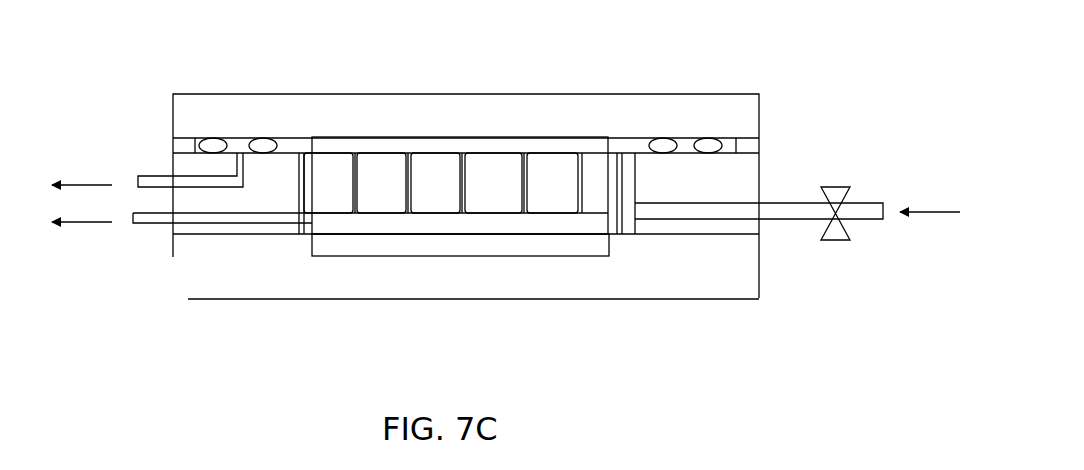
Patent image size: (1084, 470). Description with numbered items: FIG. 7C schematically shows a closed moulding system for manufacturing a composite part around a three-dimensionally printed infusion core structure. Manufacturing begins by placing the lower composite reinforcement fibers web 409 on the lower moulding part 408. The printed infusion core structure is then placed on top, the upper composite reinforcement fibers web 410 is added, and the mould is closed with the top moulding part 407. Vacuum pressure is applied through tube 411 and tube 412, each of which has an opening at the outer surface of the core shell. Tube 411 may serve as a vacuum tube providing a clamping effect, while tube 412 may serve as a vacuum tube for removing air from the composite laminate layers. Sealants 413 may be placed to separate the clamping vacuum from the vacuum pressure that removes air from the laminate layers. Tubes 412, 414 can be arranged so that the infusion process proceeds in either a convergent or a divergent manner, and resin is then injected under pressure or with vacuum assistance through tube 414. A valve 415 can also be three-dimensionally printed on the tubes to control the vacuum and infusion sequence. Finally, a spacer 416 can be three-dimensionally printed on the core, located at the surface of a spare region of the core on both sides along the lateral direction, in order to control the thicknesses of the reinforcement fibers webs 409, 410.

The top moulding part 407 is at (262, 108).
The lower moulding part 408 is at (248, 283).
The lower composite reinforcement fibers web 409 is at (433, 242).
The upper composite reinforcement fibers web 410 is at (467, 143).
The tube 411 is at (163, 179).
The tube 412 is at (222, 224).
The sealants 413 is at (205, 140).
The tube 414 is at (762, 201).
The valve 415 is at (871, 261).
The spacer 416 is at (760, 145).